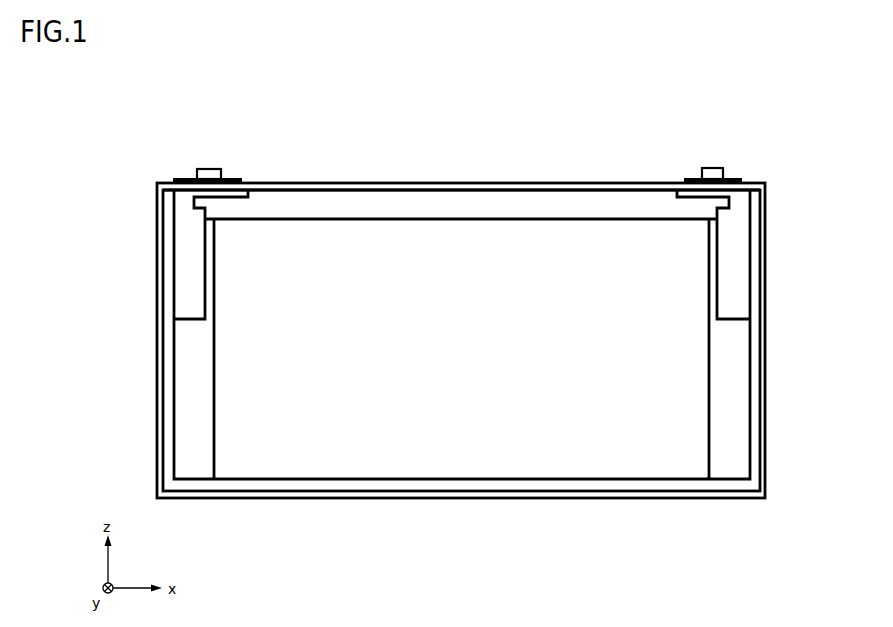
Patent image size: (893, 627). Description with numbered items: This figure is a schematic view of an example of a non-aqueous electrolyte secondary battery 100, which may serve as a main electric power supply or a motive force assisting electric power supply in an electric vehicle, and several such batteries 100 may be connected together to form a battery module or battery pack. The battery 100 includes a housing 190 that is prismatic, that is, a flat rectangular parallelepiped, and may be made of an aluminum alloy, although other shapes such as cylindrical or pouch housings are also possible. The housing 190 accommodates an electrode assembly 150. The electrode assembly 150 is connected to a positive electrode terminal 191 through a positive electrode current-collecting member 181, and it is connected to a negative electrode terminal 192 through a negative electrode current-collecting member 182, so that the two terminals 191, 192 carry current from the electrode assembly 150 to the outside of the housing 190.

The battery 100 is at (798, 122).
The electrode assembly 150 is at (462, 437).
The positive electrode current-collecting member 181 is at (732, 270).
The negative electrode current-collecting member 182 is at (187, 261).
The housing 190 is at (457, 182).
The positive electrode terminal 191 is at (713, 168).
The negative electrode terminal 192 is at (206, 168).